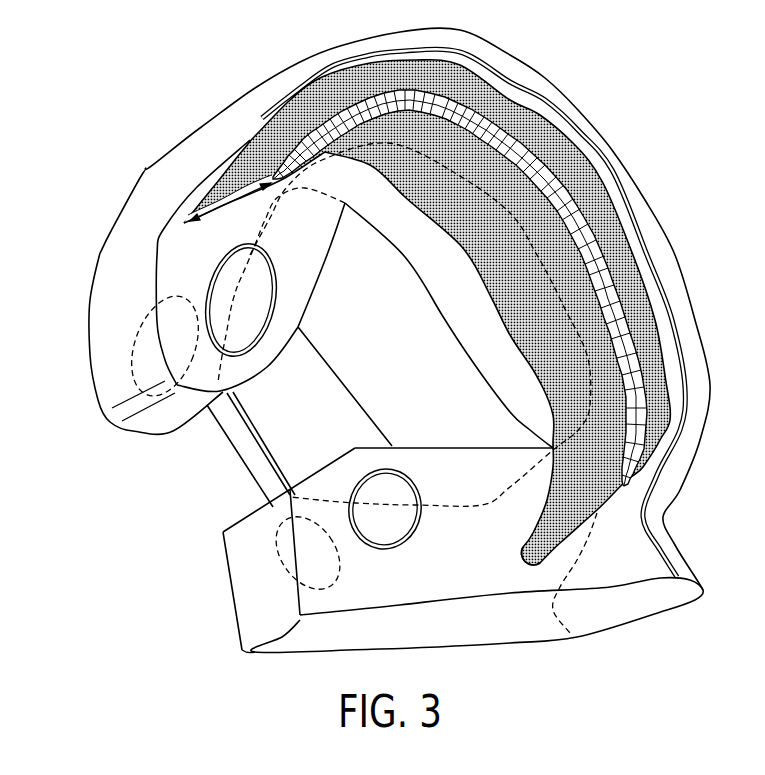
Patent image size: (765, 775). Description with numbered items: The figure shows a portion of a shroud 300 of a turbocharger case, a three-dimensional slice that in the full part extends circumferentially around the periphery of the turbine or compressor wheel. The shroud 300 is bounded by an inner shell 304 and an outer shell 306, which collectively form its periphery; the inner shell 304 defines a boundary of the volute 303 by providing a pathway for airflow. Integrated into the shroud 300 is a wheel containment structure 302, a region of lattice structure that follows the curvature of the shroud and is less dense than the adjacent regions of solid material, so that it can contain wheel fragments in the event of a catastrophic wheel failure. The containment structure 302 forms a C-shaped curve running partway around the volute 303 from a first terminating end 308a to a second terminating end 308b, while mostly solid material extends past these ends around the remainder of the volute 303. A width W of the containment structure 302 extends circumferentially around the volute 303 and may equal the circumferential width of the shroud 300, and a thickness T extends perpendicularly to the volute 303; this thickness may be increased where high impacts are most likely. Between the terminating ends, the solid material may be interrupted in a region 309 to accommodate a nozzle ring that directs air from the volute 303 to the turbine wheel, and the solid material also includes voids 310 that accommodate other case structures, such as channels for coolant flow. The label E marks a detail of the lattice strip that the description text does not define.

The shroud 300 is at (125, 22).
The wheel containment structure 302 is at (455, 250).
The volute 303 is at (385, 363).
The inner shell 304 is at (485, 342).
The outer shell 306 is at (113, 264).
The first terminating end 308a is at (180, 236).
The second terminating end 308b is at (510, 566).
The region 309 is at (205, 478).
The voids 310 is at (268, 256).
The width W is at (218, 212).
The thickness T is at (623, 483).
The edge E is at (630, 468).